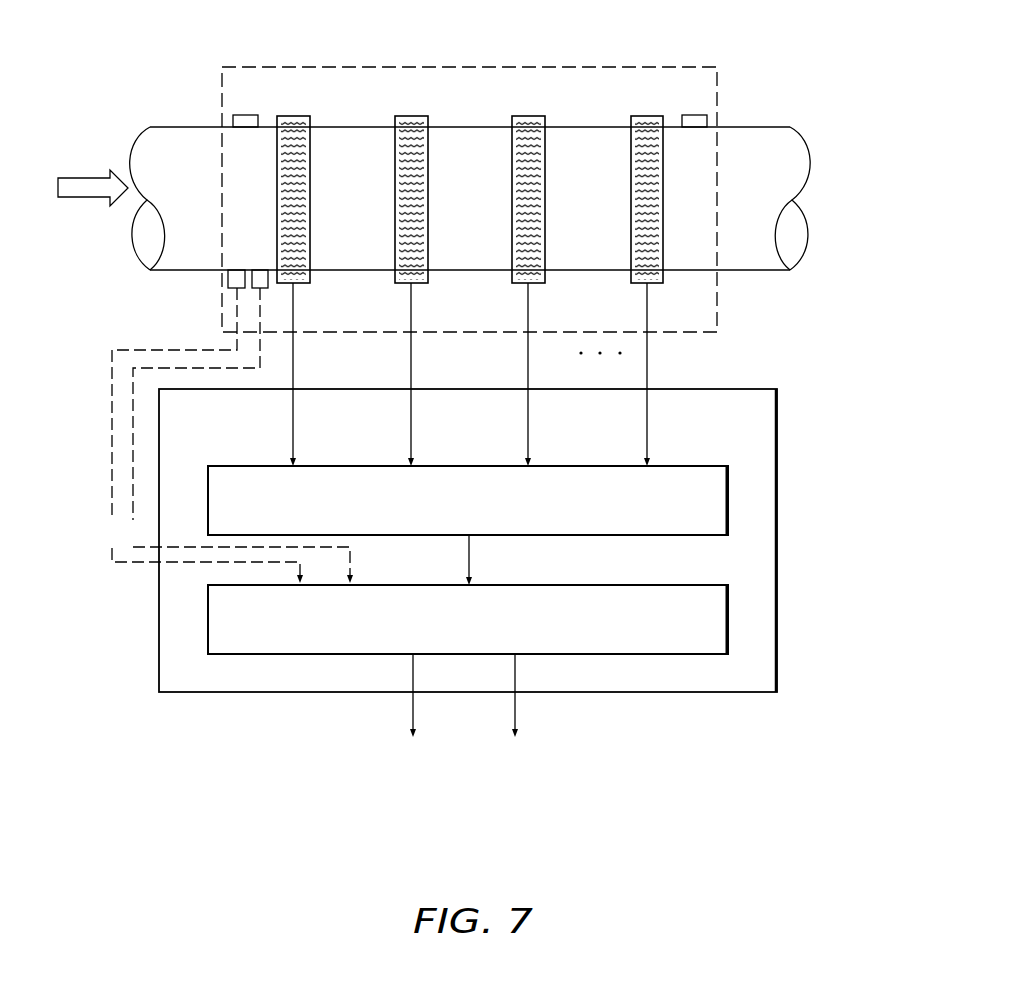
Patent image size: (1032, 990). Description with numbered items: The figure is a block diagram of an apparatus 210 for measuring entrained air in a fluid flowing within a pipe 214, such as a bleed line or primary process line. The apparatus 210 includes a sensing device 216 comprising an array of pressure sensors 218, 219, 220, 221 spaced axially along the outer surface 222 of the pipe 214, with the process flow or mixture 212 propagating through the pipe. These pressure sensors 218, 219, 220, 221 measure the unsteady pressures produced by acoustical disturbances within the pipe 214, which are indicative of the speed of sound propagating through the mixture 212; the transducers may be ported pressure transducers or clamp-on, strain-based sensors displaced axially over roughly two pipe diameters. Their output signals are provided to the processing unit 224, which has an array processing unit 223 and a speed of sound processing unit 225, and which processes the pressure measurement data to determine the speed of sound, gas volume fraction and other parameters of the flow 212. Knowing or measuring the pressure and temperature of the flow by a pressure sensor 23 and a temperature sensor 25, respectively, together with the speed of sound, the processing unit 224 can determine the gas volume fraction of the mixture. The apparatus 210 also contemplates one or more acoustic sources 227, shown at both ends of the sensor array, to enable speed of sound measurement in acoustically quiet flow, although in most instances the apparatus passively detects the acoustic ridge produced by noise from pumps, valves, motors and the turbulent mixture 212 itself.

The apparatus 210 is at (473, 420).
The mixture 212 is at (80, 178).
The pipe 214 is at (763, 127).
The sensing device 216 is at (593, 67).
The pressure sensor 218 is at (310, 174).
The pressure sensor 219 is at (428, 173).
The pressure sensor 220 is at (545, 174).
The pressure sensor 221 is at (663, 160).
The outer surface 222 is at (748, 247).
The array processing unit 223 is at (728, 500).
The processing unit 224 is at (784, 432).
The speed of sound processing unit 225 is at (728, 623).
The acoustic source 227 is at (247, 113).
The pressure sensor 23 is at (225, 284).
The temperature sensor 25 is at (273, 284).